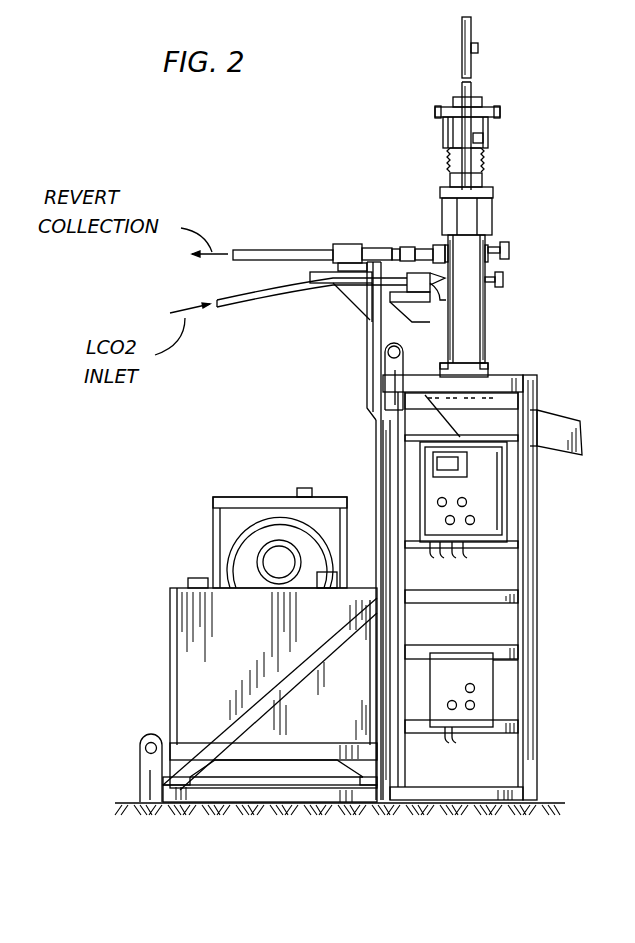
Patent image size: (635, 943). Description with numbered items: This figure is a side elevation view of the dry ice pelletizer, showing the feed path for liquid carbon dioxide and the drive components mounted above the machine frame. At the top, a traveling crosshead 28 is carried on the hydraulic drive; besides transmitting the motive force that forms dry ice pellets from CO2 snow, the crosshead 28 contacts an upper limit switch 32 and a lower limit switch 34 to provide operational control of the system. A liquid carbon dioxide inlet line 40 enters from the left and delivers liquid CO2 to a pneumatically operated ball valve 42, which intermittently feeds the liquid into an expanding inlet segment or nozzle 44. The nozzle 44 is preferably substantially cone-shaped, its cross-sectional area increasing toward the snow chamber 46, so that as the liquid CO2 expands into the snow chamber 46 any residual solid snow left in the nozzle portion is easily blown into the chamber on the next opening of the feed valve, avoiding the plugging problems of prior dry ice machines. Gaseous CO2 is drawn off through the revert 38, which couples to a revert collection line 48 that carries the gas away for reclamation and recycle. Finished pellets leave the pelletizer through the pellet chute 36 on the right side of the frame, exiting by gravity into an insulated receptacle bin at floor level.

The traveling crosshead 28 is at (498, 110).
The upper limit switch 32 is at (479, 47).
The lower limit switch 34 is at (483, 141).
The pellet chute 36 is at (560, 428).
The revert 38 is at (348, 243).
The liquid carbon dioxide inlet line 40 is at (285, 298).
The pneumatically operated ball valve 42 is at (383, 305).
The expanding inlet segment or nozzle 44 is at (444, 300).
The snow chamber 46 is at (468, 222).
The revert collection line 48 is at (284, 249).